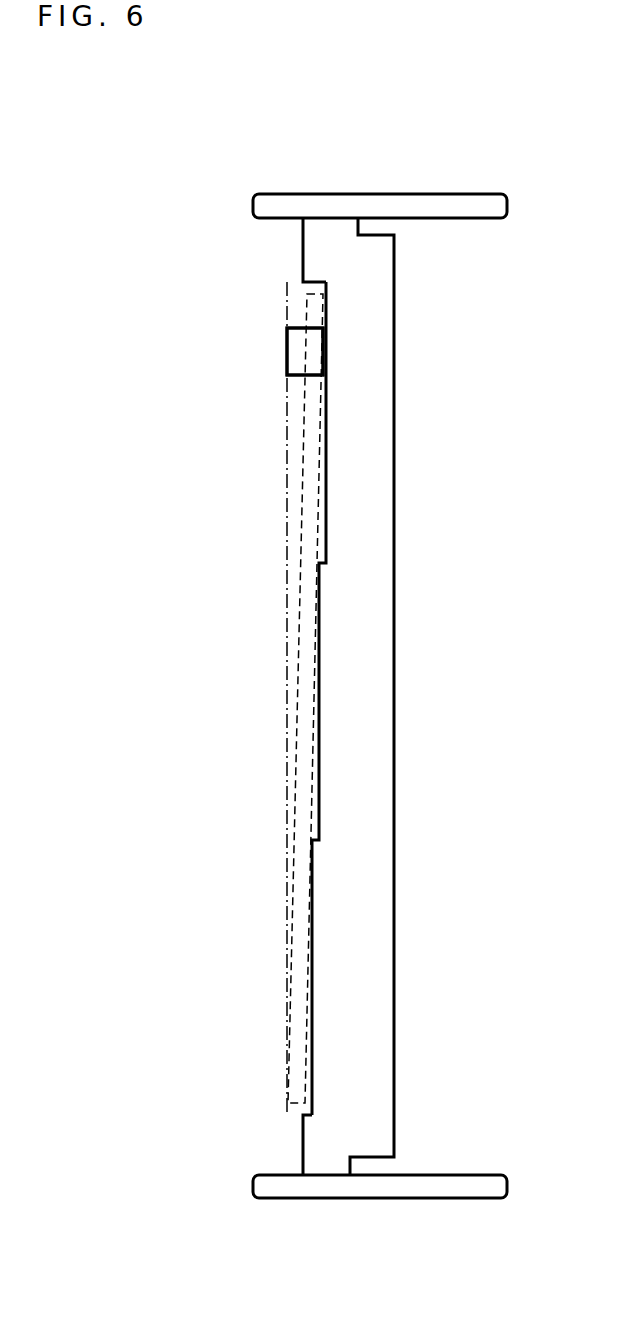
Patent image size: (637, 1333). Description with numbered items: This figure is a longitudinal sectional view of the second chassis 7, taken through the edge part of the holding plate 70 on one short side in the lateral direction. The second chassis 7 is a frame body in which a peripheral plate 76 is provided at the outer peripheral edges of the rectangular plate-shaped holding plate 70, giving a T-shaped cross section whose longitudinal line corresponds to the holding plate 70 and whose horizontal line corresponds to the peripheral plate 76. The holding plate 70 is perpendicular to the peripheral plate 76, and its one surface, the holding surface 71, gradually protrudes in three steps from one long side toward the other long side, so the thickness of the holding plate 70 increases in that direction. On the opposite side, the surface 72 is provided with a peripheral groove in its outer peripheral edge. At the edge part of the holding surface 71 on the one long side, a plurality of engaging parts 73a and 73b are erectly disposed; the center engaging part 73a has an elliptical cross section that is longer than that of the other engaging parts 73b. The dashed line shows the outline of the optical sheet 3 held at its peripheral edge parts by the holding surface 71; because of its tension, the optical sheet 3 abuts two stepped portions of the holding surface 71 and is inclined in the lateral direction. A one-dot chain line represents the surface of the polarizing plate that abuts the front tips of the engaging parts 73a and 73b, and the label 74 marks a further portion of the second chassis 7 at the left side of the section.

The second chassis 7 is at (303, 687).
The peripheral plate 76 is at (447, 198).
The surface 72 is at (395, 265).
The holding plate 70 is at (315, 696).
The support portion 74 is at (303, 237).
The holding surface 71 is at (325, 513).
The center engaging part 73a is at (290, 352).
The other engaging part 73b is at (305, 351).
The optical sheet 3 is at (303, 455).